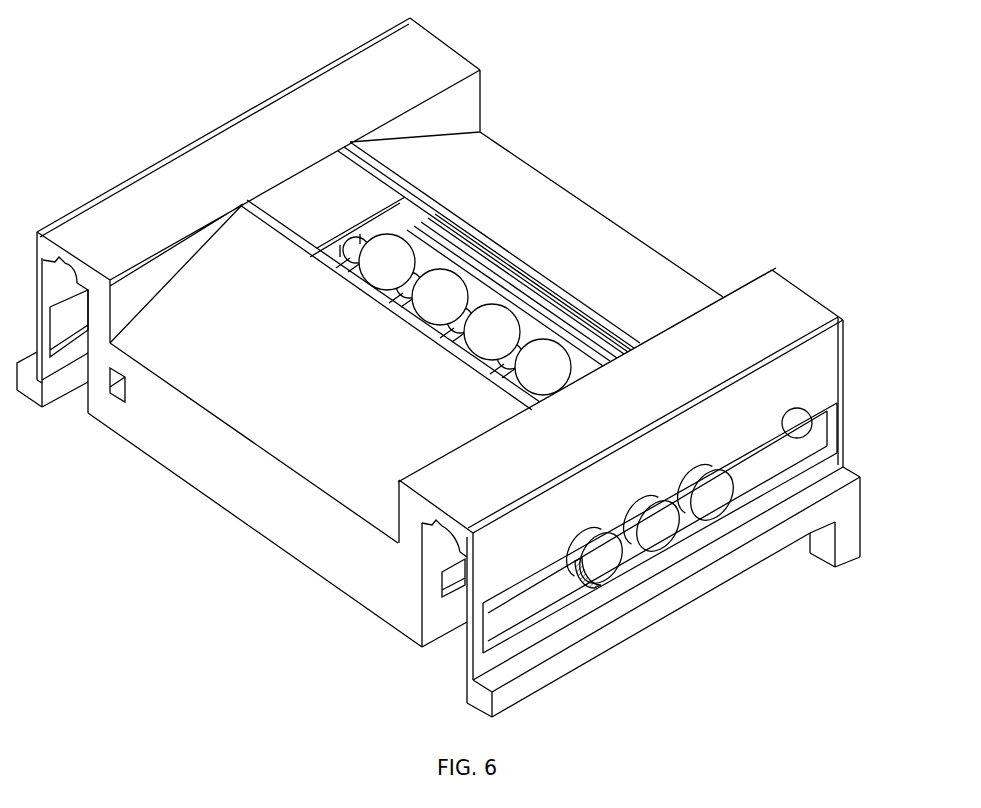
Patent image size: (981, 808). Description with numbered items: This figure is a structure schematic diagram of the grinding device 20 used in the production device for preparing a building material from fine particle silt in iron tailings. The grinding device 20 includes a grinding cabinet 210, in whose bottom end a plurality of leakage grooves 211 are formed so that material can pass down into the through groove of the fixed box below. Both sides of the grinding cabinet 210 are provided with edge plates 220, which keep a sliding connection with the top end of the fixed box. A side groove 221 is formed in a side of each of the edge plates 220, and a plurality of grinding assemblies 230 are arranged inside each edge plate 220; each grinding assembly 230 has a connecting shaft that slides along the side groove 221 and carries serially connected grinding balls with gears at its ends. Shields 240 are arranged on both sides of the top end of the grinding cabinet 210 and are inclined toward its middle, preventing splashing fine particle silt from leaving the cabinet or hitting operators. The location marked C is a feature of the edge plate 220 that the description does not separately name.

The grinding device 20 is at (695, 186).
The grinding cabinet 210 is at (207, 498).
The leakage grooves 211 is at (498, 267).
The edge plates 220 is at (807, 290).
The side groove 221 is at (838, 437).
The grinding assemblies 230 is at (600, 343).
The shields 240 is at (482, 147).
The hole C is at (800, 411).